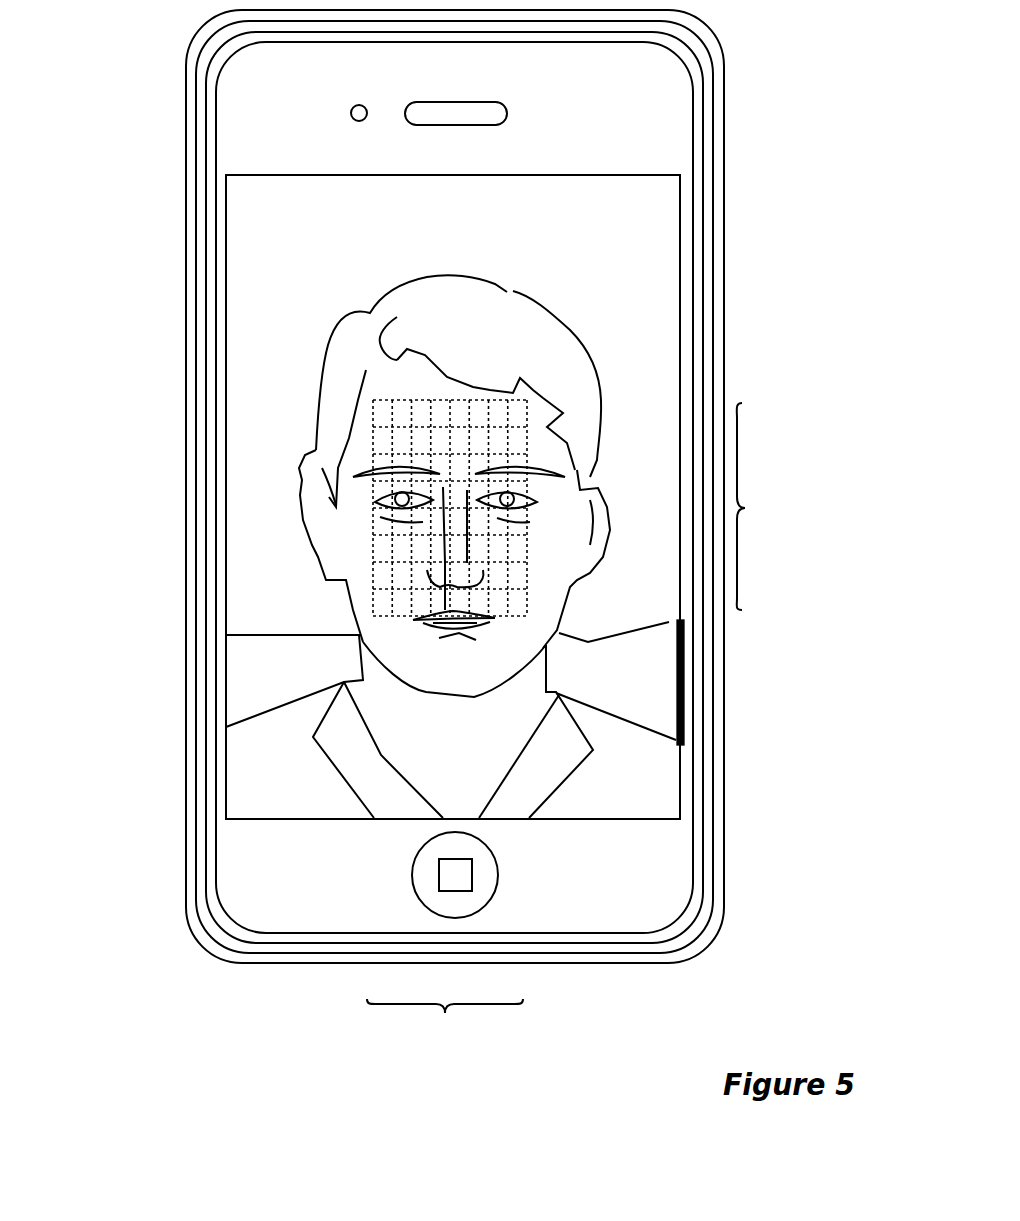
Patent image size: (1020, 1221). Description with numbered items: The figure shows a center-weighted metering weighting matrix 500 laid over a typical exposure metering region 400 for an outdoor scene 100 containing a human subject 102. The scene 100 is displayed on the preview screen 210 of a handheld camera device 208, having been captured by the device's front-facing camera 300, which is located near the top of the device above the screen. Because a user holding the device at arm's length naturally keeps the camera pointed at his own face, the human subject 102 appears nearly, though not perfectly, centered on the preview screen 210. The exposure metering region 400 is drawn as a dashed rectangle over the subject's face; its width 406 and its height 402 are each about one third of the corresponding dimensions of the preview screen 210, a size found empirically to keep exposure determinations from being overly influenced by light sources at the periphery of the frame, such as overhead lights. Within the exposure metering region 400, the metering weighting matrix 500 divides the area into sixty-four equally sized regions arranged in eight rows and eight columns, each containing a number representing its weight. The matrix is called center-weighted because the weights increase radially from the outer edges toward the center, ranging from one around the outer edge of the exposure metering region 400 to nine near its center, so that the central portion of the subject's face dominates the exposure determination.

The outdoor scene 100 is at (351, 244).
The human subject 102 is at (426, 277).
The camera device 208 is at (725, 133).
The preview screen 210 is at (367, 175).
The front-facing camera 300 is at (351, 113).
The exposure metering region 400 is at (430, 398).
The exposure metering rectangle height 402 is at (745, 508).
The exposure metering rectangle width 406 is at (445, 1050).
The center-weighted metering weighting matrix 500 is at (433, 512).